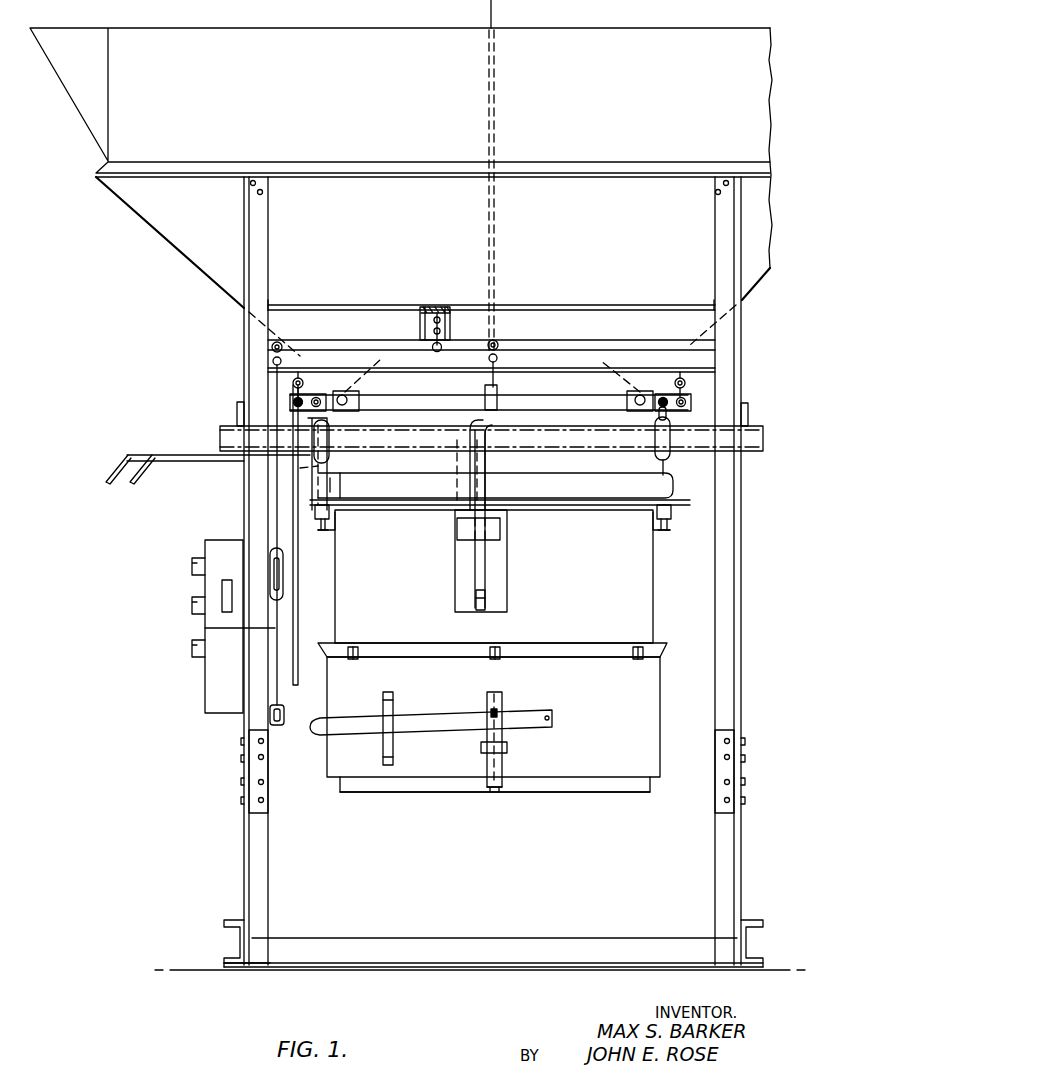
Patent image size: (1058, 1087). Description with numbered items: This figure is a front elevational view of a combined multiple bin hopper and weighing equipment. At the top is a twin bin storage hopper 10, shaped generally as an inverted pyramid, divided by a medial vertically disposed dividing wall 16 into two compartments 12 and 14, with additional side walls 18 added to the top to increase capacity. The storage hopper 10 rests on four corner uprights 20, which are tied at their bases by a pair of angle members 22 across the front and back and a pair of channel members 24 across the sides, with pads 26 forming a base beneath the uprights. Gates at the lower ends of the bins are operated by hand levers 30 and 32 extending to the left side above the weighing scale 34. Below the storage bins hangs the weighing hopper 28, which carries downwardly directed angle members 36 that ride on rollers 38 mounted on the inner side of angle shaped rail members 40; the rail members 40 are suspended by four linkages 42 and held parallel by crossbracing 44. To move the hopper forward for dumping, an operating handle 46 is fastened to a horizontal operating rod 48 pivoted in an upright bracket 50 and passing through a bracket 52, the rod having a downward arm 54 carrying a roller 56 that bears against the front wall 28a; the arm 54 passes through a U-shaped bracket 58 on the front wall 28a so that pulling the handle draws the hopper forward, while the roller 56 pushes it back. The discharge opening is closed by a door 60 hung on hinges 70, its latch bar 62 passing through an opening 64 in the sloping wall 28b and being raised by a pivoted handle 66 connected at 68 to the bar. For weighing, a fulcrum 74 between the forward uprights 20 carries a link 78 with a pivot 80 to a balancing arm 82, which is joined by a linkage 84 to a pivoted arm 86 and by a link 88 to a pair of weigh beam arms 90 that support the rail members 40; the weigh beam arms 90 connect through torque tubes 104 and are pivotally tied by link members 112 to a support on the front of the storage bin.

The storage hopper 10 is at (205, 257).
The compartment 12 is at (320, 263).
The compartment 14 is at (643, 260).
The dividing wall 16 is at (488, 12).
The additional side walls 18 is at (72, 106).
The corner uprights 20 is at (246, 866).
The angle members 22 is at (488, 938).
The channel members 24 is at (232, 918).
The pads 26 is at (245, 970).
The weighing hopper 28 is at (653, 600).
The front wall 28a is at (509, 568).
The sloping wall 28b is at (365, 792).
The hand lever 30 is at (118, 468).
The hand lever 32 is at (143, 474).
The weighing scale 34 is at (206, 698).
The angle members 36 is at (333, 530).
The rollers 38 is at (316, 533).
The rail members 40 is at (312, 518).
The linkages 42 is at (300, 468).
The crossbracing 44 is at (408, 478).
The operating handle 46 is at (299, 613).
The operating rod 48 is at (385, 428).
The upright bracket 50 is at (222, 440).
The bracket 52 is at (466, 487).
The arm 54 is at (486, 575).
The roller 56 is at (475, 600).
The U-shaped bracket 58 is at (500, 530).
The door 60 is at (433, 765).
The latch bar 62 is at (503, 765).
The opening 64 is at (500, 786).
The pivoted handle 66 is at (435, 716).
The connection 68 is at (499, 711).
The hinges 70 is at (353, 660).
The fulcrum 74 is at (441, 306).
The link 78 is at (443, 336).
The pivot 80 is at (448, 360).
The balancing arm 82 is at (386, 345).
The linkage 84 is at (205, 628).
The pivoted arm 86 is at (278, 726).
The link 88 is at (500, 383).
The weigh beam arms 90 is at (392, 412).
The torque tubes 104 is at (493, 385).
The link members 112 is at (292, 383).